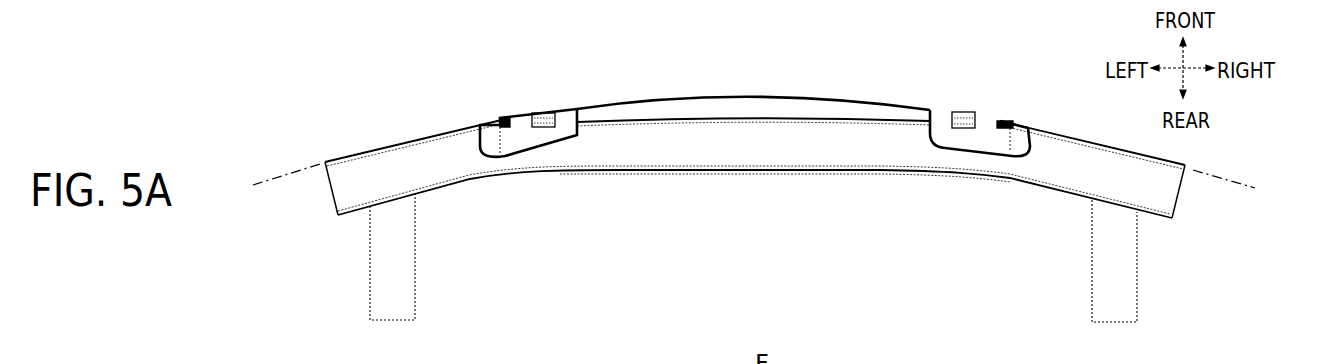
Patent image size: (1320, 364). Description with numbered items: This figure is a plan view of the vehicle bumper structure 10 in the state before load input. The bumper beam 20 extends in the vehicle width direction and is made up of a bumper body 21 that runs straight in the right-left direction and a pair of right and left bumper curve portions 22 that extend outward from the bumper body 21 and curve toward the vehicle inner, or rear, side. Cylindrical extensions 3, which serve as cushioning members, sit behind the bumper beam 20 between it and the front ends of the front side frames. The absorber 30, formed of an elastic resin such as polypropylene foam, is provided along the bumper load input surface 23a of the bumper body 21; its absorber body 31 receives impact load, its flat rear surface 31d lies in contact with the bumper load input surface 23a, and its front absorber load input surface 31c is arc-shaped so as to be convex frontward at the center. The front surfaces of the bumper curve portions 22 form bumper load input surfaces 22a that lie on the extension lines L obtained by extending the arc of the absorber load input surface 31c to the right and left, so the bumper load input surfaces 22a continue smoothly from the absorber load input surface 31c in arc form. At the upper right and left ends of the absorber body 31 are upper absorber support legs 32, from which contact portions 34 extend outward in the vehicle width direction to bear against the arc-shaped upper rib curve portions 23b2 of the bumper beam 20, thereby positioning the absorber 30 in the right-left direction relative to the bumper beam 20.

The cylindrical extension 3 is at (403, 277).
The vehicle bumper structure 10 is at (916, 87).
The bumper beam 20 is at (755, 161).
The bumper body 21 is at (642, 173).
The bumper curve portion 22 is at (755, 174).
The bumper load input surface 22a is at (403, 145).
The bumper load input surface 23a is at (803, 122).
The upper rib curve portion 23b2 is at (466, 129).
The absorber 30 is at (753, 85).
The absorber body 31 is at (753, 93).
The absorber load input surface 31c is at (716, 96).
The rear surface 31d is at (630, 122).
The upper absorber support leg 32 is at (752, 170).
The contact portion 34 is at (488, 142).
The extension line L is at (284, 168).